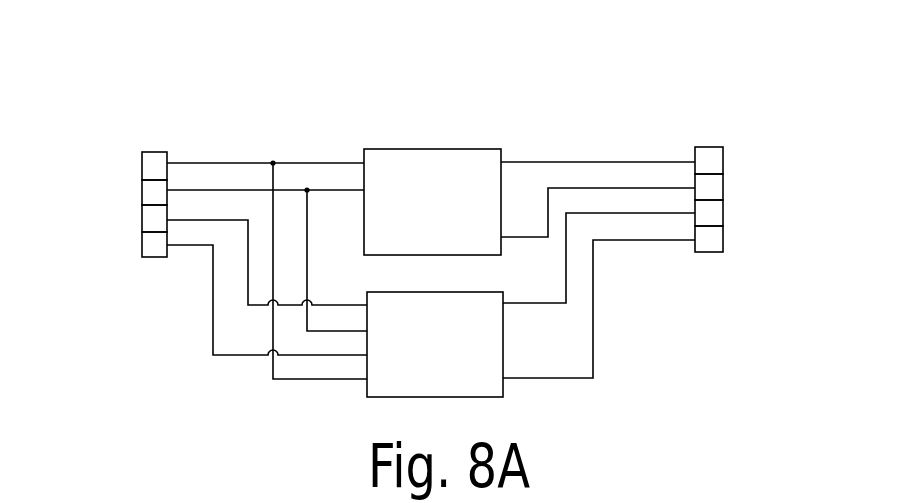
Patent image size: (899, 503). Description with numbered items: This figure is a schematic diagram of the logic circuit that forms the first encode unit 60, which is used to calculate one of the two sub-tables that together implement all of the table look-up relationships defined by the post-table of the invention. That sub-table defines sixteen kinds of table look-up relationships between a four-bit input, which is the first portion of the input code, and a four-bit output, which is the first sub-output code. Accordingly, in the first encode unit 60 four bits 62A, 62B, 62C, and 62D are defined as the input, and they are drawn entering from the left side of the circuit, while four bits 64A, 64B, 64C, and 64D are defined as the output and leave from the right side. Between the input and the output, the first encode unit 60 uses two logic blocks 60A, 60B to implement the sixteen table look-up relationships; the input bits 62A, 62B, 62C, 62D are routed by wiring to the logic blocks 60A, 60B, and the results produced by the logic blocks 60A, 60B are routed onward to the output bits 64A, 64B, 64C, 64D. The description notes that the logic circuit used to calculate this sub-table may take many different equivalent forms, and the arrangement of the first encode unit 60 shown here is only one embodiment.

The first encode unit 60 is at (395, 100).
The logic block 60A is at (467, 214).
The logic block 60B is at (470, 356).
The input bit 62A is at (142, 165).
The input bit 62B is at (141, 197).
The input bit 62C is at (141, 217).
The input bit 62D is at (141, 244).
The output bit 64A is at (723, 158).
The output bit 64B is at (723, 188).
The output bit 64C is at (723, 213).
The output bit 64D is at (723, 240).